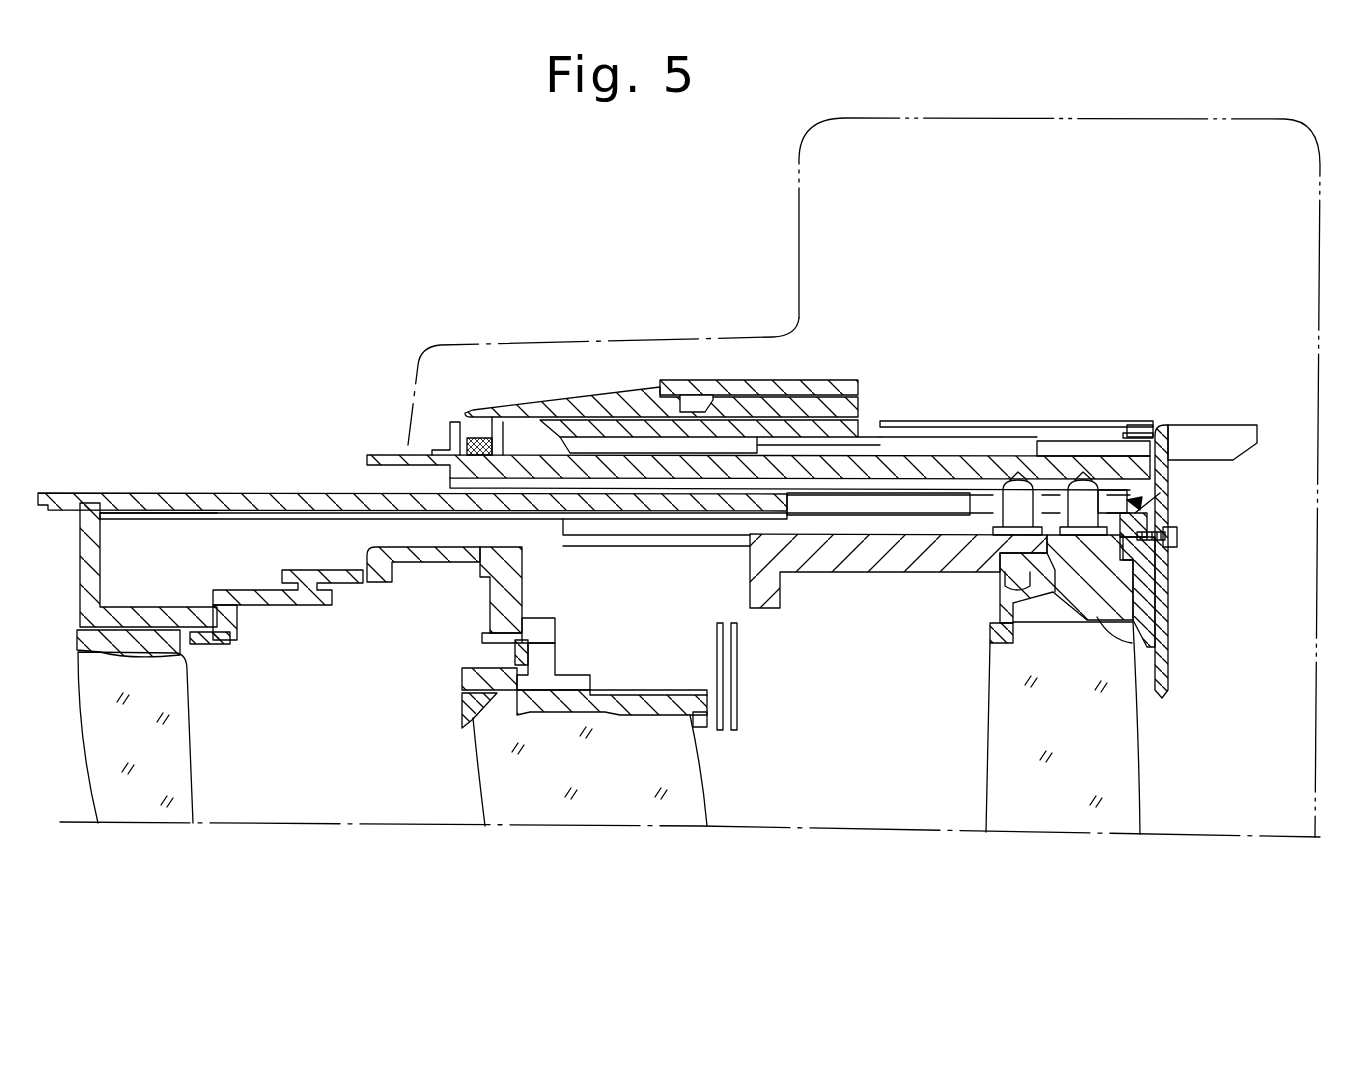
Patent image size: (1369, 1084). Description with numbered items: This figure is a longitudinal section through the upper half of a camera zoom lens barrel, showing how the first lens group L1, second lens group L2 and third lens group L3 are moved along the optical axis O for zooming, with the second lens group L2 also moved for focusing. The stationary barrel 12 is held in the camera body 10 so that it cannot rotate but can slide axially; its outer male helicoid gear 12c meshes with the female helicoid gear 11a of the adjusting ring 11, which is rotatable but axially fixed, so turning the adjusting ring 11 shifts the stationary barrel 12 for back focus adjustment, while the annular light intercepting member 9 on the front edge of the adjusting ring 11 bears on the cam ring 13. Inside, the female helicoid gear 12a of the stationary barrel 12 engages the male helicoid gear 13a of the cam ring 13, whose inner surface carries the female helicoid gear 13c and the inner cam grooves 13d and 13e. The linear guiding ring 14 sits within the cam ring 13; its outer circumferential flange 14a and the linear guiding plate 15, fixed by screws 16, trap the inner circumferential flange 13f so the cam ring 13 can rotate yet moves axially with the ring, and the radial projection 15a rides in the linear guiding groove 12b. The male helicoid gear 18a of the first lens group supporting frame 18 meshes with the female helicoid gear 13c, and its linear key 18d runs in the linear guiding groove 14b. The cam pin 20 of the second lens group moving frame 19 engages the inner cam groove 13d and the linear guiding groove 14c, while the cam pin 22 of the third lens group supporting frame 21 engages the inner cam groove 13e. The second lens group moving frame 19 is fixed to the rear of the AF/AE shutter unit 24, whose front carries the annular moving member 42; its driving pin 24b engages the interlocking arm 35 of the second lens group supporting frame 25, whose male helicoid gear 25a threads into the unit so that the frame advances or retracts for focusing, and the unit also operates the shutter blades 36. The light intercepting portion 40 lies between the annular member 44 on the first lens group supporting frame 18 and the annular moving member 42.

The camera body 10 is at (1135, 118).
The annular light intercepting member 9 is at (470, 432).
The adjusting ring 11 is at (690, 385).
The female helicoid gear 11a is at (718, 405).
The stationary barrel 12 is at (637, 408).
The female helicoid gear 12a is at (863, 440).
The linear guiding groove 12b is at (1195, 432).
The male helicoid gear 12c is at (800, 425).
The cam ring 13 is at (531, 452).
The male helicoid gear 13a is at (1067, 462).
The female helicoid gear 13c is at (512, 480).
The inner cam groove 13d is at (998, 500).
The inner cam groove 13e is at (1105, 440).
The inner circumferential flange 13f is at (1133, 515).
The linear guiding ring 14 is at (1150, 603).
The outer circumferential flange 14a is at (1146, 495).
The linear guiding groove 14b is at (897, 513).
The linear guiding groove 14c is at (958, 528).
The linear guiding plate 15 is at (1163, 578).
The radial projection 15a is at (1157, 430).
The screws 16 is at (1178, 540).
The first lens group supporting frame 18 is at (320, 488).
The male helicoid gear 18a is at (752, 488).
The linear key 18d is at (258, 513).
The second lens group moving frame 19 is at (862, 575).
The cam pin 20 is at (980, 537).
The third lens group supporting frame 21 is at (1167, 645).
The cam pin 22 is at (1157, 541).
The AF/AE shutter unit 24 is at (712, 652).
The driving pin 24b is at (545, 620).
The second lens group supporting frame 25 is at (707, 727).
The male helicoid gear 25a is at (660, 690).
The interlocking arm 35 is at (556, 655).
The shutter blades 36 is at (740, 697).
The light intercepting portion 40 is at (312, 557).
The annular moving member 42 is at (378, 549).
The annular member 44 is at (177, 617).
The first lens group L1 is at (196, 797).
The second lens group L2 is at (490, 797).
The third lens group L3 is at (992, 800).
The optical axis O is at (818, 828).